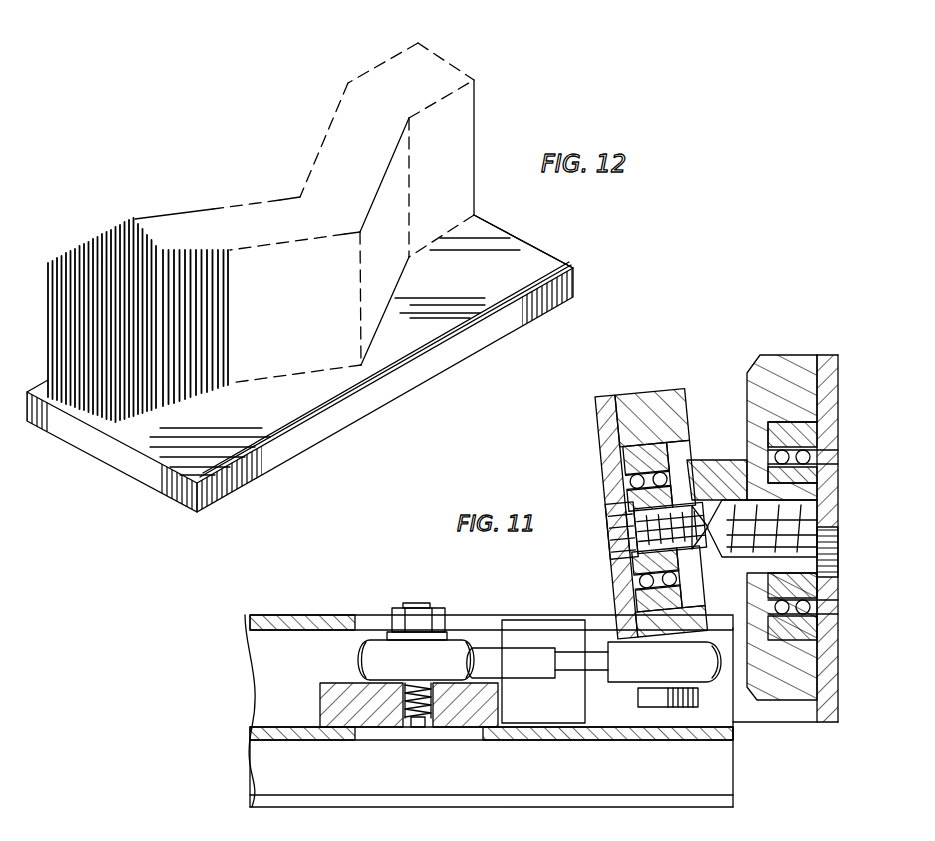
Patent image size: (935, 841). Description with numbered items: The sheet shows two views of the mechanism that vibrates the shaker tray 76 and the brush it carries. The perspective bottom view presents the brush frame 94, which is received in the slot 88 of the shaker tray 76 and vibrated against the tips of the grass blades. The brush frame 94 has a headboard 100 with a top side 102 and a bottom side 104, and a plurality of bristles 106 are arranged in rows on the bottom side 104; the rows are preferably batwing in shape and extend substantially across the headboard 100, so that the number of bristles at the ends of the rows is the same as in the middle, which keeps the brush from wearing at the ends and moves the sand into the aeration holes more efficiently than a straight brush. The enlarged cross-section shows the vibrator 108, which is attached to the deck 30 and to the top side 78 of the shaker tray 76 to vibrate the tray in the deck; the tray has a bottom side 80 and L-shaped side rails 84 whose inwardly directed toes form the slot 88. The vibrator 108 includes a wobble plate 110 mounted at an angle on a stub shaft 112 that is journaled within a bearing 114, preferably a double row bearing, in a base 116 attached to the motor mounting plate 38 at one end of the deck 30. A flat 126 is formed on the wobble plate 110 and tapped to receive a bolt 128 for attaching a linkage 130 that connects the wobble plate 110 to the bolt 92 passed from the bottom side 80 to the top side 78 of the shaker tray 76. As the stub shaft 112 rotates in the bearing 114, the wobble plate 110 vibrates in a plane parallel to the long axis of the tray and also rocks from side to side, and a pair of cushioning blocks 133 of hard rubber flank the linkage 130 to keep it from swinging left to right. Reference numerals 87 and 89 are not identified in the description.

In FIG. 11, the deck 30 is at (281, 614).
In FIG. 11, the motor mounting plate 38 is at (843, 620).
In FIG. 11, the shaker tray 76 is at (288, 720).
In FIG. 11, the top side 78 is at (257, 736).
In FIG. 11, the bottom side 80 is at (278, 741).
In FIG. 11, the side rails 84 is at (733, 788).
In FIG. 11, the plate 87 is at (153, 836).
In FIG. 11, the slot 88 is at (704, 767).
In FIG. 11, the plate 89 is at (270, 834).
In FIG. 11, the bolt 92 is at (433, 606).
In FIG. 12, the brush frame 94 is at (494, 91).
In FIG. 12, the headboard 100 is at (536, 249).
In FIG. 12, the top side 102 is at (268, 411).
In FIG. 12, the bottom side 104 is at (486, 296).
In FIG. 12, the bristles 106 is at (136, 218).
In FIG. 11, the vibrator 108 is at (845, 445).
In FIG. 11, the wobble plate 110 is at (674, 478).
In FIG. 11, the stub shaft 112 is at (705, 460).
In FIG. 11, the bearing 114 is at (805, 475).
In FIG. 11, the base 116 is at (773, 360).
In FIG. 11, the flat 126 is at (623, 625).
In FIG. 11, the bolt 128 is at (699, 688).
In FIG. 11, the linkage 130 is at (532, 682).
In FIG. 11, the cushioning blocks 133 is at (519, 619).